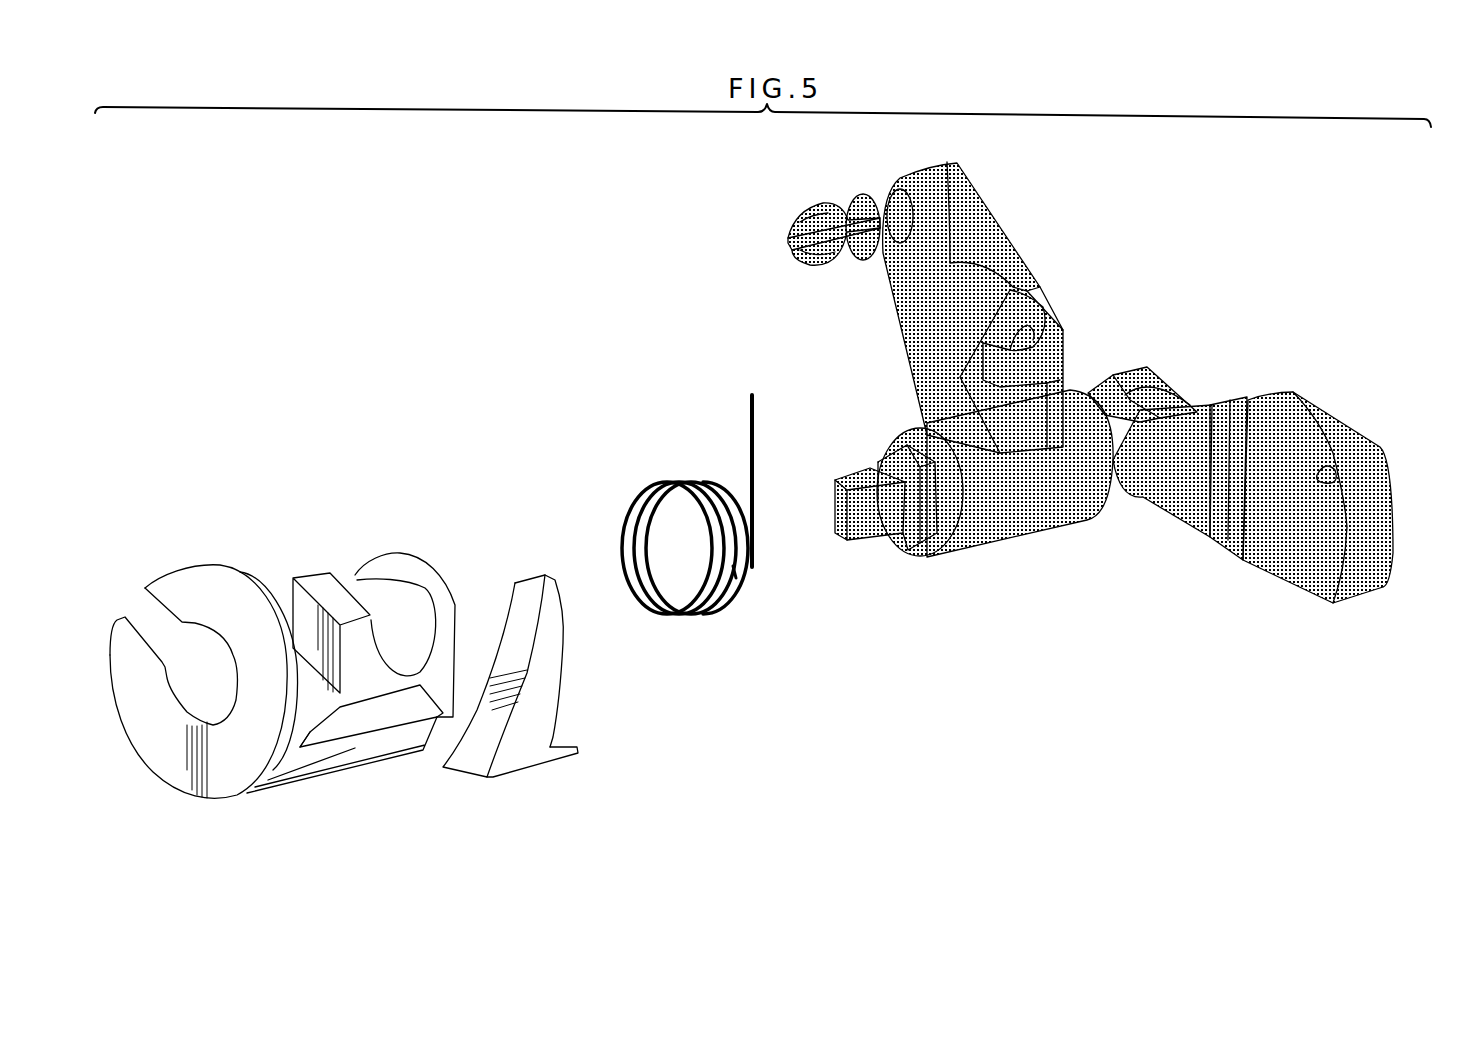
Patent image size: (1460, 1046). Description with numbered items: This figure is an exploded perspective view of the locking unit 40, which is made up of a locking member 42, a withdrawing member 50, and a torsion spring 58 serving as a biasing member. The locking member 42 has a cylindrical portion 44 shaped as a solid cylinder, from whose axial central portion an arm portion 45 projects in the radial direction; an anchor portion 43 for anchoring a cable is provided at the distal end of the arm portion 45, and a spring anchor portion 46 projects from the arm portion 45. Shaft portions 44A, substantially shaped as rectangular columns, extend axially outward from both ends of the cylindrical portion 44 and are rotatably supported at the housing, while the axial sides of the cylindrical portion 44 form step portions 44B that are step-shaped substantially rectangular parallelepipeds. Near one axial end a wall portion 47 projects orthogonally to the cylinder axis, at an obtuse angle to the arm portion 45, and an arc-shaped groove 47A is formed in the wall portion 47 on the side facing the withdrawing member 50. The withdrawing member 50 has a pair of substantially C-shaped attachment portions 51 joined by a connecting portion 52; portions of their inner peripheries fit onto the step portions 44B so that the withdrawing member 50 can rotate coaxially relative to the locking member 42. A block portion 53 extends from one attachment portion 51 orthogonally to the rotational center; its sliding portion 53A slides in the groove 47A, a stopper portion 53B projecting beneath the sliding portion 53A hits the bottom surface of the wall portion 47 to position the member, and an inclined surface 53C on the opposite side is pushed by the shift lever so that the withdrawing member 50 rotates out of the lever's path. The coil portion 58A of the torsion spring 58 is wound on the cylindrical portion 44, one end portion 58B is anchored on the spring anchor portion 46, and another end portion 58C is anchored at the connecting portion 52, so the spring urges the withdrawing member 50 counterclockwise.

The locking unit 40 is at (468, 266).
The locking member 42 is at (1277, 340).
The anchor portion 43 is at (828, 212).
The cylindrical portion 44 is at (1027, 507).
The shaft portions 44A is at (875, 527).
The step portions 44B is at (920, 440).
The arm portion 45 is at (990, 232).
The spring anchor portion 46 is at (1025, 330).
The wall portion 47 is at (1347, 482).
The arc-shaped groove 47A is at (1228, 510).
The withdrawing member 50 is at (340, 492).
The attachment portions 51 is at (246, 567).
The connecting portion 52 is at (378, 753).
The block portion 53 is at (540, 759).
The sliding portion 53A is at (562, 643).
The stopper portion 53B is at (563, 742).
The inclined surface 53C is at (493, 747).
The torsion spring 58 is at (653, 478).
The coil portion 58A is at (632, 507).
The one end portion 58B is at (755, 432).
The another end portion 58C is at (730, 570).